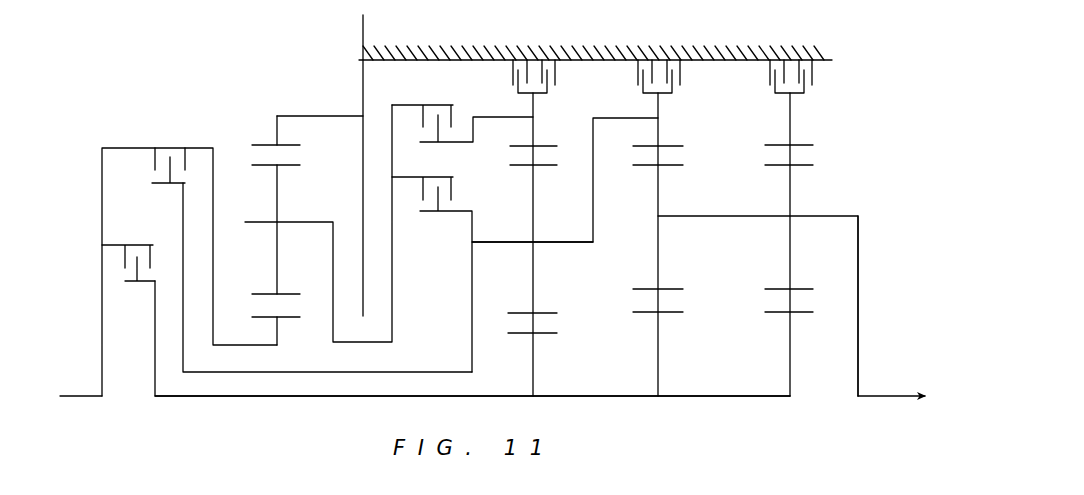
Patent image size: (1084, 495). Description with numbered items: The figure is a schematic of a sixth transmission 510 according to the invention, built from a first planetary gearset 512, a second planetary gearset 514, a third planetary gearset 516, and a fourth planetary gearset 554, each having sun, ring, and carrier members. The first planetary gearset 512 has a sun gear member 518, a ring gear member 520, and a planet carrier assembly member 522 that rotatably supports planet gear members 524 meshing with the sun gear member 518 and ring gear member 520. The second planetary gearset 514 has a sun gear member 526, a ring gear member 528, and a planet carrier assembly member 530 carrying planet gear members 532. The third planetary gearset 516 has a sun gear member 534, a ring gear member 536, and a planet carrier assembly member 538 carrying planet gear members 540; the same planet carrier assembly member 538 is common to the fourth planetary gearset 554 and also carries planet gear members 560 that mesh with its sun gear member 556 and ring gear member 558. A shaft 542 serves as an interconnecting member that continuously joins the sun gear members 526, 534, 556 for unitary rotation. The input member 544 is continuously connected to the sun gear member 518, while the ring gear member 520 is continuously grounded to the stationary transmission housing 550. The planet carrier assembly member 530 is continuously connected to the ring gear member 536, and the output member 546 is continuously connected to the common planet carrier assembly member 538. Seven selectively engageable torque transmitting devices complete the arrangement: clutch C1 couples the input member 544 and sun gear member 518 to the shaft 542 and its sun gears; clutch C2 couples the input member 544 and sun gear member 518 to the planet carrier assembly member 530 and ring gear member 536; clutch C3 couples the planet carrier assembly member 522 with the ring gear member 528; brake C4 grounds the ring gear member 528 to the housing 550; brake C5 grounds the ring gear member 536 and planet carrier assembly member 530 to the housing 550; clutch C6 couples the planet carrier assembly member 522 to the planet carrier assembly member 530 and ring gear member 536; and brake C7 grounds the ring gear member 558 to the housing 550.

The transmission 510 is at (878, 105).
The first planetary gearset 512 is at (310, 274).
The second planetary gearset 514 is at (541, 275).
The third planetary gearset 516 is at (735, 275).
The sun gear member 518 is at (262, 320).
The ring gear member 520 is at (262, 143).
The planet carrier assembly member 522 is at (305, 220).
The planet gear members 524 is at (262, 168).
The sun gear member 526 is at (510, 340).
The ring gear member 528 is at (520, 148).
The planet carrier assembly member 530 is at (565, 243).
The planet gear members 532 is at (548, 167).
The sun gear member 534 is at (689, 302).
The ring gear member 536 is at (672, 143).
The planet carrier assembly member 538 is at (730, 214).
The planet gear members 540 is at (633, 167).
The shaft 542 is at (765, 400).
The input member 544 is at (92, 400).
The output member 546 is at (888, 396).
The transmission housing 550 is at (762, 48).
The fourth planetary gearset 554 is at (811, 244).
The sun gear member 556 is at (806, 315).
The ring gear member 558 is at (800, 145).
The planet gear members 560 is at (770, 287).
The clutch C1 is at (105, 262).
The clutch C2 is at (145, 160).
The clutch C3 is at (415, 128).
The brake C4 is at (495, 72).
The brake C5 is at (615, 72).
The clutch C6 is at (412, 200).
The brake C7 is at (750, 72).